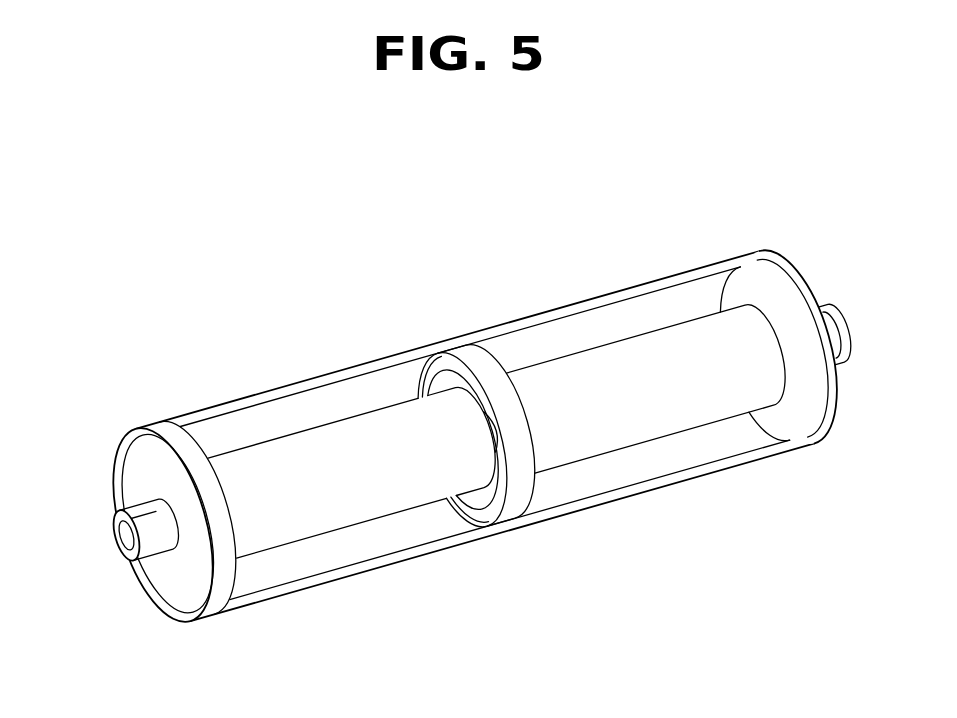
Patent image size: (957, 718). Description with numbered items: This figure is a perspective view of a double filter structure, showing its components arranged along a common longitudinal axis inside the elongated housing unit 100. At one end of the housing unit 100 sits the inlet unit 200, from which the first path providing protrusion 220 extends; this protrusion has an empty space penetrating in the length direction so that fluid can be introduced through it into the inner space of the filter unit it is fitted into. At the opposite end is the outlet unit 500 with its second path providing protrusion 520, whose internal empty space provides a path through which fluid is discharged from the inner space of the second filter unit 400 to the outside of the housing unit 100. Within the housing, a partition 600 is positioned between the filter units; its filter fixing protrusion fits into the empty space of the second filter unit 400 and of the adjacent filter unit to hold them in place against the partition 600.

The housing unit 100 is at (333, 357).
The inlet unit 200 is at (150, 468).
The first path providing protrusion 220 is at (157, 567).
The second filter unit 400 is at (648, 425).
The outlet unit 500 is at (822, 397).
The second path providing protrusion 520 is at (838, 302).
The partition 600 is at (490, 370).